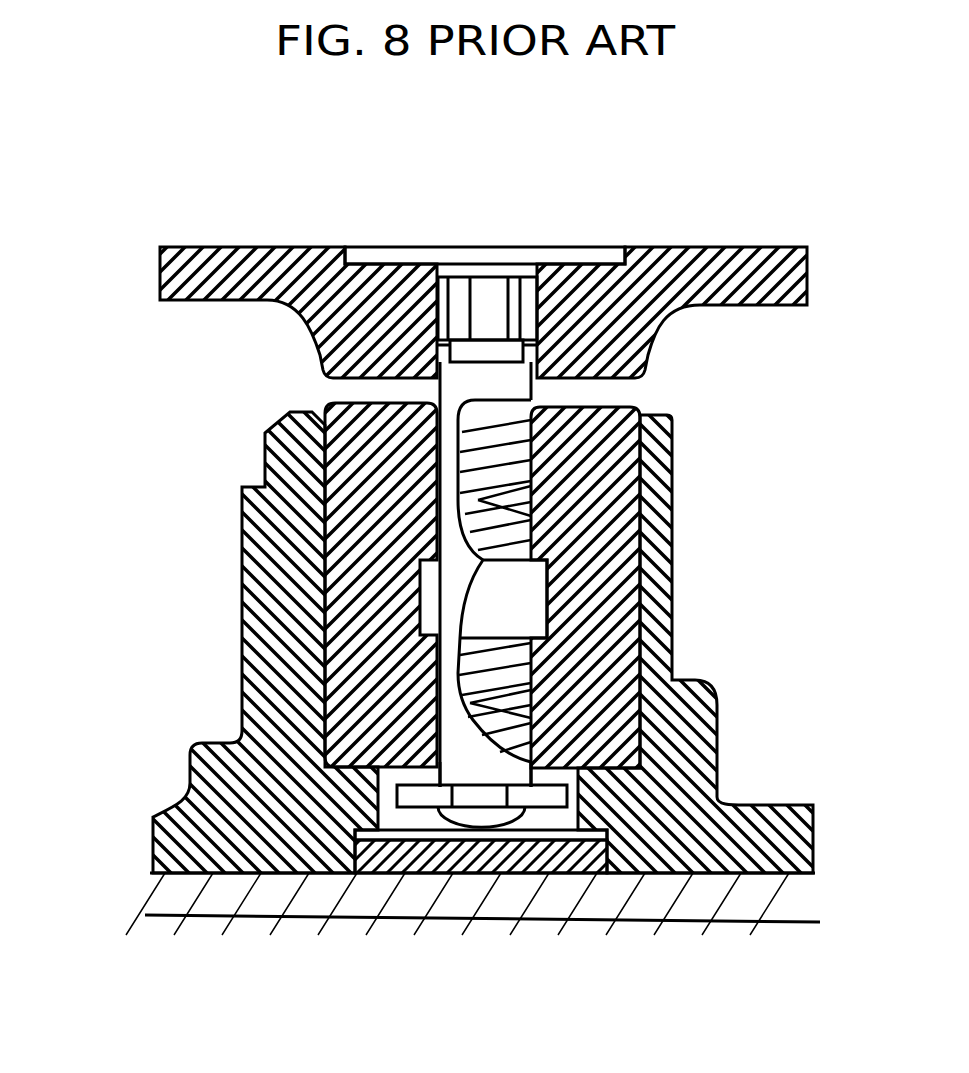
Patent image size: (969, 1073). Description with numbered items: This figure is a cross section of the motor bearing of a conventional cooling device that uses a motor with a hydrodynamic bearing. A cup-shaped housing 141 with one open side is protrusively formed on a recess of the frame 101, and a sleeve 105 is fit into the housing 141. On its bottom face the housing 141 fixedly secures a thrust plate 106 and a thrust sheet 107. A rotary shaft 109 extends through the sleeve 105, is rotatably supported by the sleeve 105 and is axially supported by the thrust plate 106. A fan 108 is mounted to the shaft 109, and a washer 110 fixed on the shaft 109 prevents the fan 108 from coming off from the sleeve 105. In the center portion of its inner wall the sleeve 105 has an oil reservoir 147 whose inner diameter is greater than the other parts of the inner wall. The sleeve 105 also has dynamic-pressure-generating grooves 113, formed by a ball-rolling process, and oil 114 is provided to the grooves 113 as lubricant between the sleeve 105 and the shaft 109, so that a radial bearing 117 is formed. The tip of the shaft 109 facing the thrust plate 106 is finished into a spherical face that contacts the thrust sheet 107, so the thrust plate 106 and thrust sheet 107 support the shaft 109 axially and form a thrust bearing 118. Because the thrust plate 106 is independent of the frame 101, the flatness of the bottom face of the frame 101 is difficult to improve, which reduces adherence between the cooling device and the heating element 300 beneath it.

The frame 101 is at (153, 838).
The sleeve 105 is at (677, 817).
The thrust plate 106 is at (570, 835).
The thrust sheet 107 is at (600, 860).
The fan 108 is at (277, 265).
The rotary shaft 109 is at (480, 762).
The washer 110 is at (422, 795).
The dynamic-pressure-generating grooves 113 is at (510, 425).
The oil 114 is at (418, 660).
The radial bearing 117 is at (537, 497).
The thrust bearing 118 is at (492, 828).
The housing 141 is at (278, 715).
The oil reservoir 147 is at (520, 605).
The heating element 300 is at (790, 907).